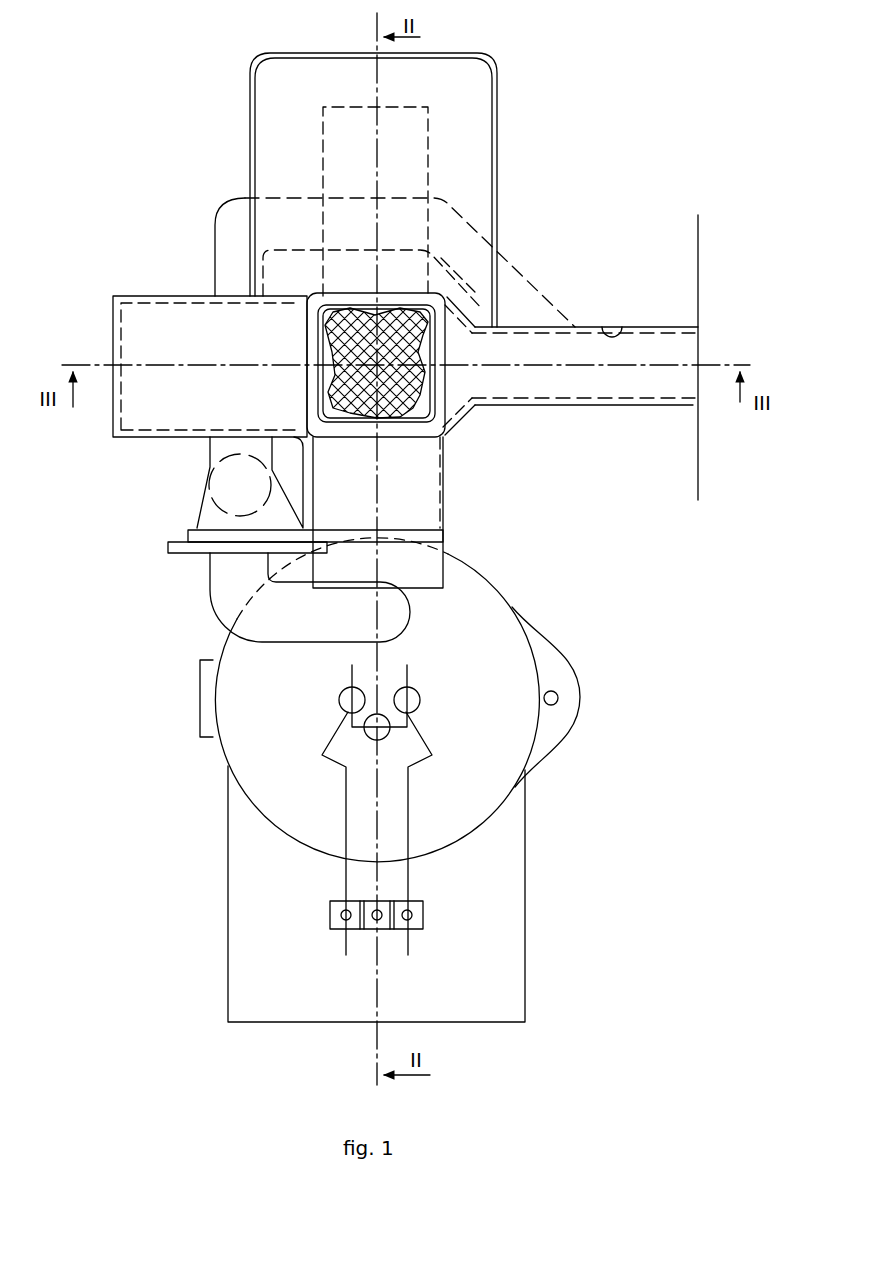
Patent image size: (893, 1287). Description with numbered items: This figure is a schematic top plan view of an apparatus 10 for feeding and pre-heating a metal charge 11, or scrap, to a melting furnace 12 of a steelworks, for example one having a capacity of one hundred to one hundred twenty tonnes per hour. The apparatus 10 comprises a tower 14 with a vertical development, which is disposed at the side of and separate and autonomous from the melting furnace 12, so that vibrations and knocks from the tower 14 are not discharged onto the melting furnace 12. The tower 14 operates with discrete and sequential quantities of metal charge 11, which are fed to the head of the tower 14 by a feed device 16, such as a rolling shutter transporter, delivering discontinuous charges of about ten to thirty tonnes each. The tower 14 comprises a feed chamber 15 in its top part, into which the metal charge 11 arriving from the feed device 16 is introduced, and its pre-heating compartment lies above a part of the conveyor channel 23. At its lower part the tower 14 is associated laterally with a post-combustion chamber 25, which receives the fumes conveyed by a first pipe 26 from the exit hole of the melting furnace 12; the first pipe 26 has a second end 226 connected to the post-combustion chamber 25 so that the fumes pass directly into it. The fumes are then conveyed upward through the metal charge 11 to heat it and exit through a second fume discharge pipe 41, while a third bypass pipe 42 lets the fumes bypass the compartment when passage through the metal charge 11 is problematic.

The apparatus 10 is at (582, 494).
The metal charge 11 is at (385, 408).
The melting furnace 12 is at (477, 828).
The tower 14 is at (400, 433).
The feed chamber 15 is at (327, 345).
The feed device 16 is at (412, 137).
The conveyor channel 23 is at (418, 580).
The post-combustion chamber 25 is at (152, 412).
The first pipe 26 is at (235, 605).
The second fume discharge pipe 41 is at (618, 327).
The third bypass pipe 42 is at (513, 288).
The second end 226 is at (212, 440).